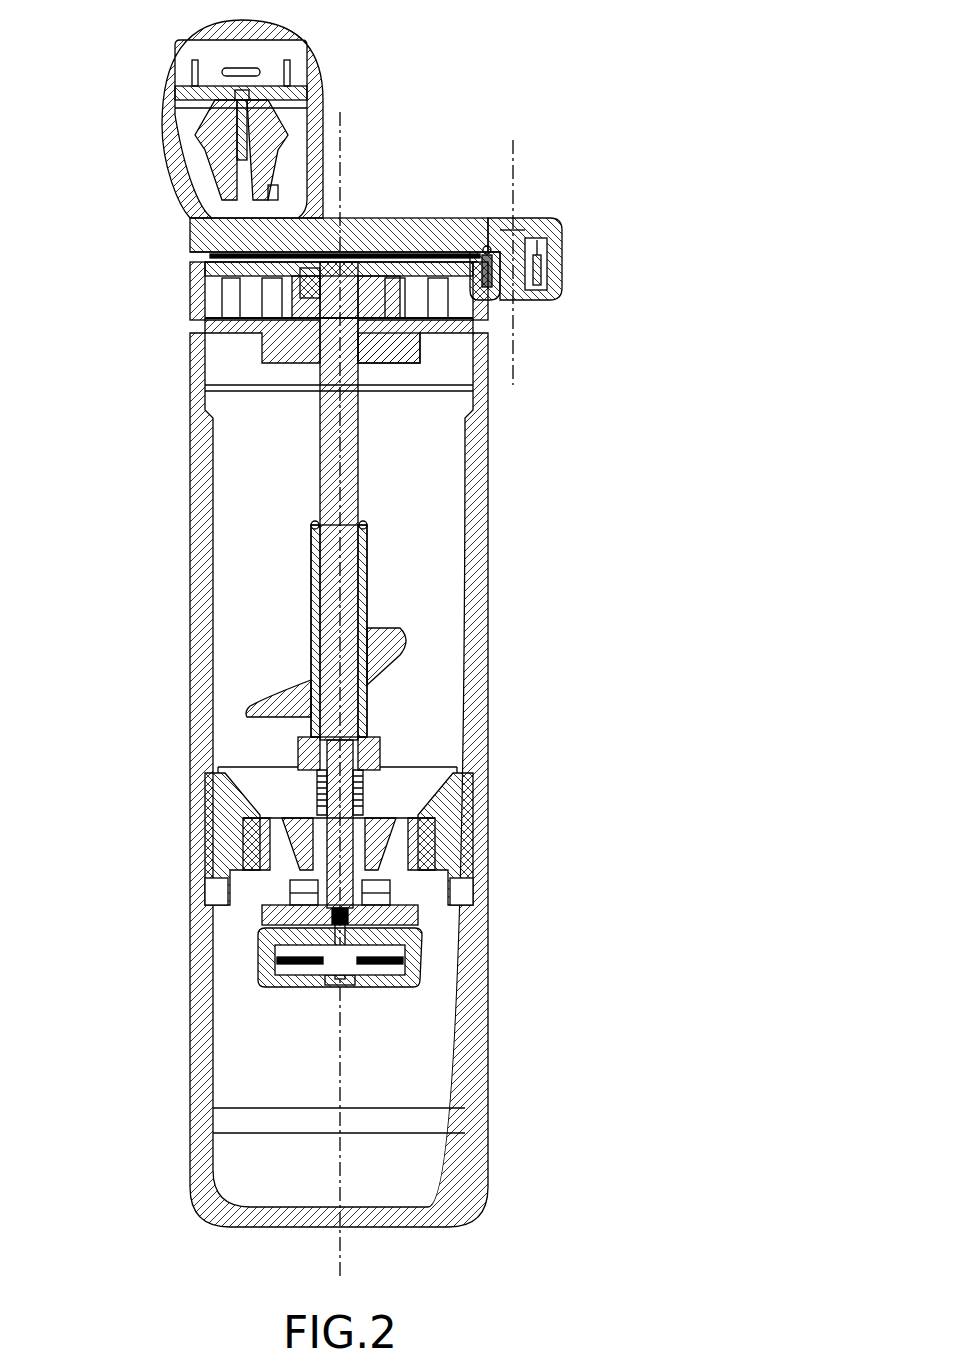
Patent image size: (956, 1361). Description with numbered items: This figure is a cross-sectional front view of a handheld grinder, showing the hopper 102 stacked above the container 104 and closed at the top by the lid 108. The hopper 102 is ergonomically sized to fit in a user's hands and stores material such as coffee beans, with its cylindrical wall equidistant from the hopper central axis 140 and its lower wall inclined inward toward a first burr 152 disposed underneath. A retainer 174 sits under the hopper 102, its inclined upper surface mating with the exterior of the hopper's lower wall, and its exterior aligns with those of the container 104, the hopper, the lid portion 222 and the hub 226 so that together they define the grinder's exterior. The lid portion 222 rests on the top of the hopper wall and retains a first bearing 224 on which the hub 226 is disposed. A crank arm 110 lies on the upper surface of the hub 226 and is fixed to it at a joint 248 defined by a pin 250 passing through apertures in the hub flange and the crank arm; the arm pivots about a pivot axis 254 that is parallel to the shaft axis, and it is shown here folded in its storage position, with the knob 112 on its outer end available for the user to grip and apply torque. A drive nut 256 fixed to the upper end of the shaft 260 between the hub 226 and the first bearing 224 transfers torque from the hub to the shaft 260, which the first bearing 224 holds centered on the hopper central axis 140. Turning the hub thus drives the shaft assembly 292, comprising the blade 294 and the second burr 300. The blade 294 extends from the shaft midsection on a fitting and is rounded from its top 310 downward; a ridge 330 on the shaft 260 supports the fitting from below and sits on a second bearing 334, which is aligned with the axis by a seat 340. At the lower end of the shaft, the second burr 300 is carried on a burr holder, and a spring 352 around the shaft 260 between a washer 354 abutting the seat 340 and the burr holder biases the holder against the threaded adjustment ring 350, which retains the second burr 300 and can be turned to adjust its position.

The hopper 102 is at (478, 563).
The container 104 is at (200, 1013).
The lid 108 is at (157, 283).
The crank arm 110 is at (400, 235).
The knob 112 is at (315, 108).
The hopper central axis 140 is at (414, 684).
The first burr 152 is at (243, 830).
The retainer 174 is at (475, 845).
The lid portion 222 is at (197, 365).
The first bearing 224 is at (388, 350).
The hub 226 is at (197, 292).
The joint 248 is at (585, 279).
The pin 250 is at (518, 300).
The pivot axis 254 is at (514, 160).
The drive nut 256 is at (307, 287).
The shaft 260 is at (332, 430).
The shaft assembly 292 is at (270, 545).
The blade 294 is at (288, 692).
The second burr 300 is at (290, 870).
The top of the blade 310 is at (313, 560).
The ridge 330 is at (365, 733).
The second bearing 334 is at (300, 752).
The seat 340 is at (380, 755).
The adjustment ring 350 is at (412, 965).
The spring 352 is at (377, 803).
The washer 354 is at (385, 775).